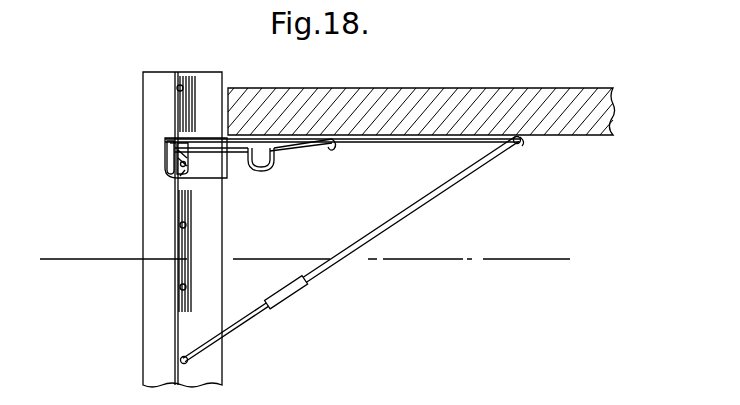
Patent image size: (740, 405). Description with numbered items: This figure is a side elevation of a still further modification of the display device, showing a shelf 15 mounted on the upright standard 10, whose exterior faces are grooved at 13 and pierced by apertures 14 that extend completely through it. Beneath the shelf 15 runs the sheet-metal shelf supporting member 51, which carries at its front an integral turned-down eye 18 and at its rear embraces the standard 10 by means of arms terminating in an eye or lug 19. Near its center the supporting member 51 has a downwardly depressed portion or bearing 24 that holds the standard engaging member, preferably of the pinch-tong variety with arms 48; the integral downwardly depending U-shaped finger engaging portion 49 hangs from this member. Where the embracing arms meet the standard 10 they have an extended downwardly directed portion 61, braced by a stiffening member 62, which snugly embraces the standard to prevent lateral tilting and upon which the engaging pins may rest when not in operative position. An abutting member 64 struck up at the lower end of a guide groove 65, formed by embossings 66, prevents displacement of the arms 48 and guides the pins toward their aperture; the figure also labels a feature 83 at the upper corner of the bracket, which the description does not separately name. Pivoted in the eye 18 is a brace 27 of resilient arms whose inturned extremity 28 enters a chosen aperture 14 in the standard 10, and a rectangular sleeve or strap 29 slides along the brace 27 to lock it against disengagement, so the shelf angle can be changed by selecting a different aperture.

The standard 10 is at (148, 355).
The groove 13 is at (182, 312).
The aperture 14 is at (138, 262).
The shelf 15 is at (605, 123).
The eye 18 is at (523, 144).
The eye or lug 19 is at (545, 230).
The depressed portion or bearing 24 is at (334, 149).
The brace 27 is at (401, 216).
The inturned extremity 28 is at (188, 362).
The sleeve or strap 29 is at (285, 292).
The arm 48 is at (212, 152).
The U-shaped finger engaging portion 49 is at (268, 166).
The shelf supporting member 51 is at (408, 143).
The extended downwardly directed portion 61 is at (205, 178).
The stiffening member 62 is at (167, 161).
The abutting member 64 is at (182, 175).
The guide groove 65 is at (179, 168).
The embossing 66 is at (187, 167).
The opening 83 is at (176, 141).